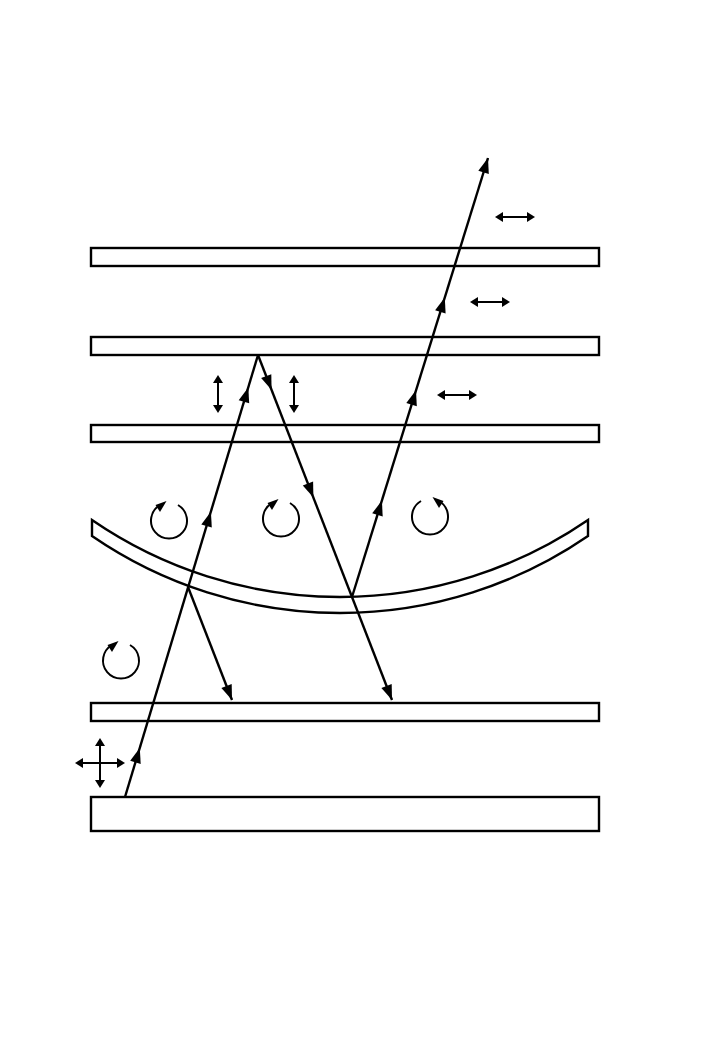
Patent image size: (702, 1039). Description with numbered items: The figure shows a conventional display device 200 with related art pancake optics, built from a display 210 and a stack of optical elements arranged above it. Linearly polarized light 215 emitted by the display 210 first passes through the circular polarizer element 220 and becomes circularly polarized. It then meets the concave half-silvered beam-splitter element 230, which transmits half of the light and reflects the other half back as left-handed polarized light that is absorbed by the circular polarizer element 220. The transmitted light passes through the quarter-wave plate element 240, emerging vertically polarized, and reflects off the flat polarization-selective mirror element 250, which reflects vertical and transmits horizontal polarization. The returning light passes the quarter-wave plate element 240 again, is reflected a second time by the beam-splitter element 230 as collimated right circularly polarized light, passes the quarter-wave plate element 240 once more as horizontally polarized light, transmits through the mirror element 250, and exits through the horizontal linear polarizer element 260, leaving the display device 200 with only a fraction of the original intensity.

The display device 200 is at (72, 84).
The display 210 is at (91, 811).
The linearly polarized light 215 is at (137, 766).
The circular polarizer element 220 is at (91, 707).
The concave half-silvered beam-splitter element 230 is at (92, 522).
The quarter-wave plate element 240 is at (91, 428).
The flat polarization-selective mirror element 250 is at (91, 341).
The linear polarizer element 260 is at (91, 252).